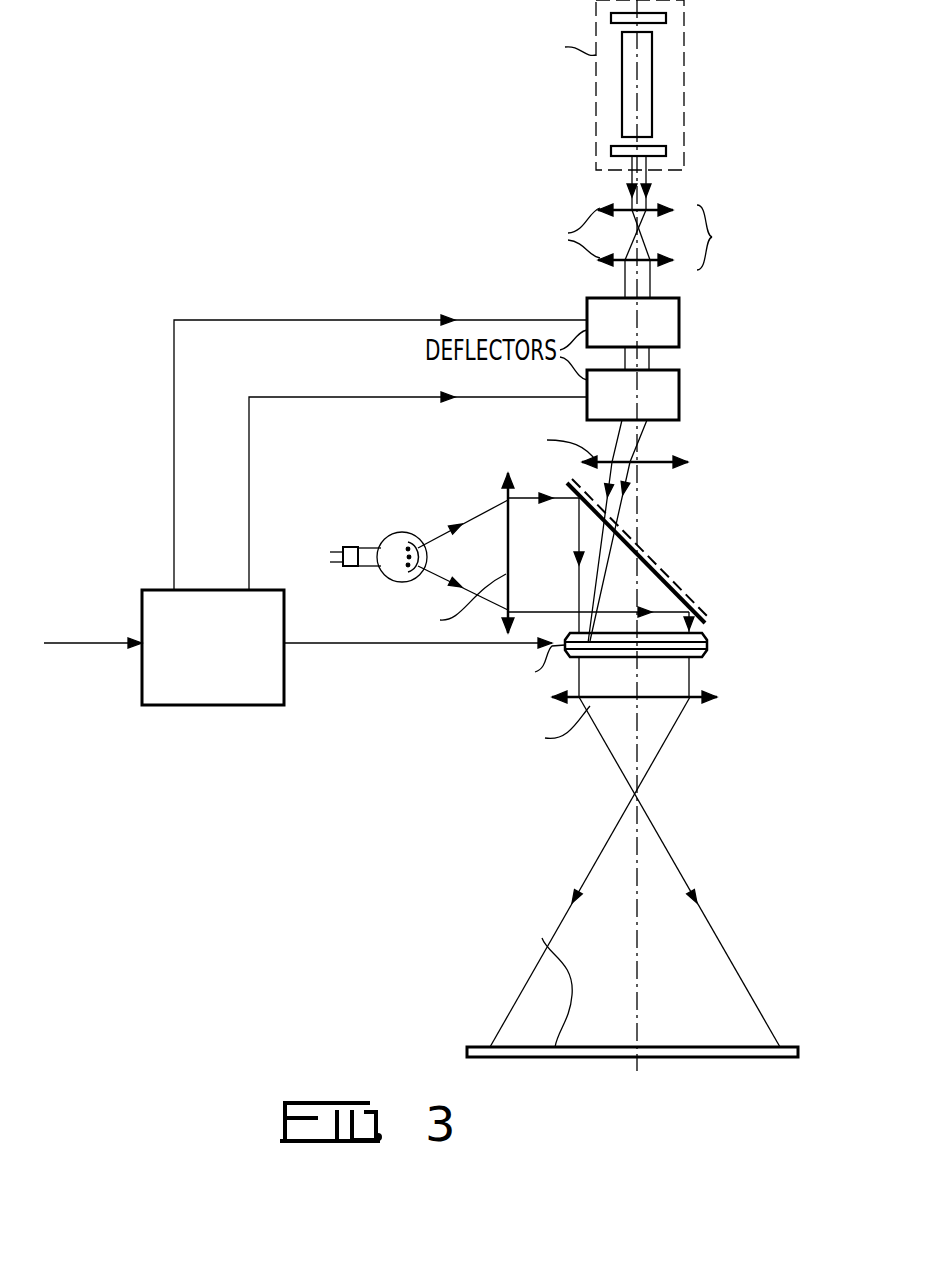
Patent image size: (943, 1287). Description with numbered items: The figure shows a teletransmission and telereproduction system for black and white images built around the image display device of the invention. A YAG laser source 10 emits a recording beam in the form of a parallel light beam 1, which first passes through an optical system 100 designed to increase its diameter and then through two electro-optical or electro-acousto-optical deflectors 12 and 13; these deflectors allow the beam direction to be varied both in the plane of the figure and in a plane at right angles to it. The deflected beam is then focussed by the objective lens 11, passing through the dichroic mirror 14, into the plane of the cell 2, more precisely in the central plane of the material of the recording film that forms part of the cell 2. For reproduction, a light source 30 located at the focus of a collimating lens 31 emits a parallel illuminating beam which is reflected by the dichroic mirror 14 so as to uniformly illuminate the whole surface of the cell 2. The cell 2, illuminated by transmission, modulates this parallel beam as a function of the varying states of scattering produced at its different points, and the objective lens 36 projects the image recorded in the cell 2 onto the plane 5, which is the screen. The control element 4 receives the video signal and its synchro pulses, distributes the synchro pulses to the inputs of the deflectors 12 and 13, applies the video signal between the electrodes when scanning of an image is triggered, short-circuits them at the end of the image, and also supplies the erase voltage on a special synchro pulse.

The YAG laser source 10 is at (672, 78).
The parallel light beam 1 is at (641, 200).
The optical system 100 is at (762, 251).
The deflector 12 is at (673, 320).
The deflector 13 is at (673, 395).
The objective lens 11 is at (690, 462).
The light source 30 is at (417, 540).
The collimating lens 31 is at (504, 508).
The dichroic mirror 14 is at (657, 572).
The cell 2 is at (708, 645).
The objective lens 36 is at (683, 704).
The plane 5 is at (480, 1045).
The control element 4 is at (268, 705).